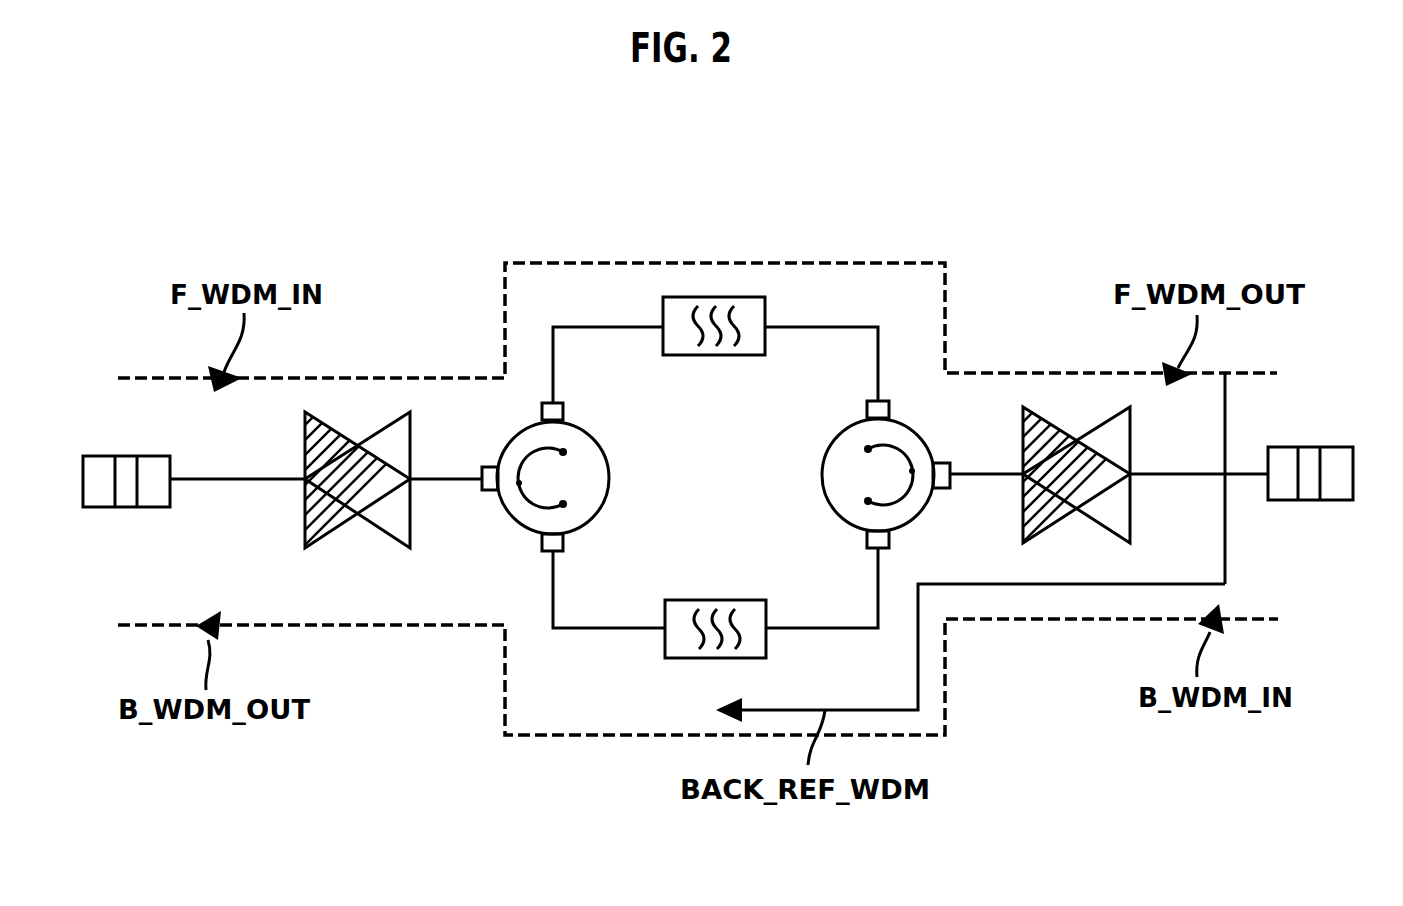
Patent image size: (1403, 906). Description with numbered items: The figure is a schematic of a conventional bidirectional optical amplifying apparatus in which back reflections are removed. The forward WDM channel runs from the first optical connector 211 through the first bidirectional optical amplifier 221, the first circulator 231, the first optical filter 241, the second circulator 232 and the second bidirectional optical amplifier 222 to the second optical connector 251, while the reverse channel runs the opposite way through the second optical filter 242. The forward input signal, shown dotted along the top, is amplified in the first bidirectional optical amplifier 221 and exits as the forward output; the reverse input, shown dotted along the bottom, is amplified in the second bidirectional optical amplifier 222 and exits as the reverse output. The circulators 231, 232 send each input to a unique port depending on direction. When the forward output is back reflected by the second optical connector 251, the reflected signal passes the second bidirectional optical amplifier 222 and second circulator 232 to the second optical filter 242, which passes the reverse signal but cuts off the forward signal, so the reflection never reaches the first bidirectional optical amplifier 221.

The first optical connector 211 is at (115, 507).
The first bidirectional optical amplifier 221 is at (336, 528).
The first circulator 231 is at (609, 478).
The second circulator 232 is at (822, 496).
The first optical filter 241 is at (720, 355).
The second optical filter 242 is at (712, 600).
The second bidirectional optical amplifier 222 is at (1058, 525).
The second optical connector 251 is at (1302, 500).